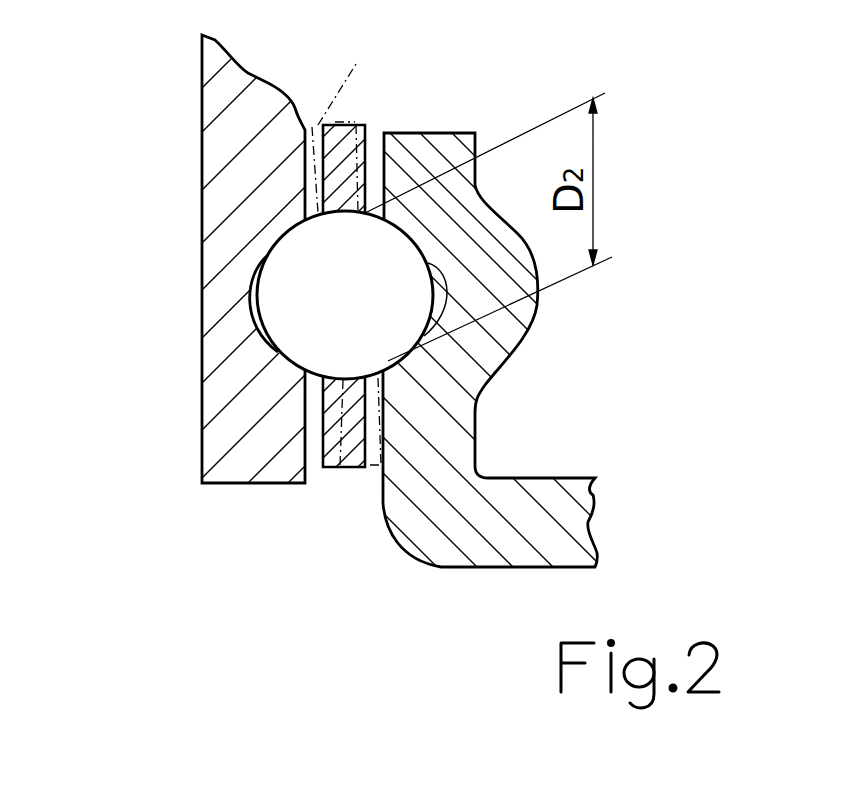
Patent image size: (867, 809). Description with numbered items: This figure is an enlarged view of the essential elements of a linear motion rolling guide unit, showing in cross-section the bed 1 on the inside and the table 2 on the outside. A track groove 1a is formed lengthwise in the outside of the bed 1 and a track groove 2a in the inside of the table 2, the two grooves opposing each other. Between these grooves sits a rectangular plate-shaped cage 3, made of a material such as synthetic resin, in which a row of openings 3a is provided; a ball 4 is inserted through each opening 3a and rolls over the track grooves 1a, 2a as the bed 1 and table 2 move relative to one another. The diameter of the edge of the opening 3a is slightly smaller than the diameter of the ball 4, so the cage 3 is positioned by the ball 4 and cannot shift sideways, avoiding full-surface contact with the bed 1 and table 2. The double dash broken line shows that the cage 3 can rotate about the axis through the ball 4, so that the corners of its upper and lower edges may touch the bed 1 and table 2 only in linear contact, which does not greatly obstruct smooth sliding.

The bed 1 is at (485, 555).
The track groove 1a is at (436, 347).
The table 2 is at (240, 143).
The track groove 2a is at (252, 316).
The cage 3 is at (318, 122).
The opening 3a is at (343, 214).
The ball 4 is at (303, 350).